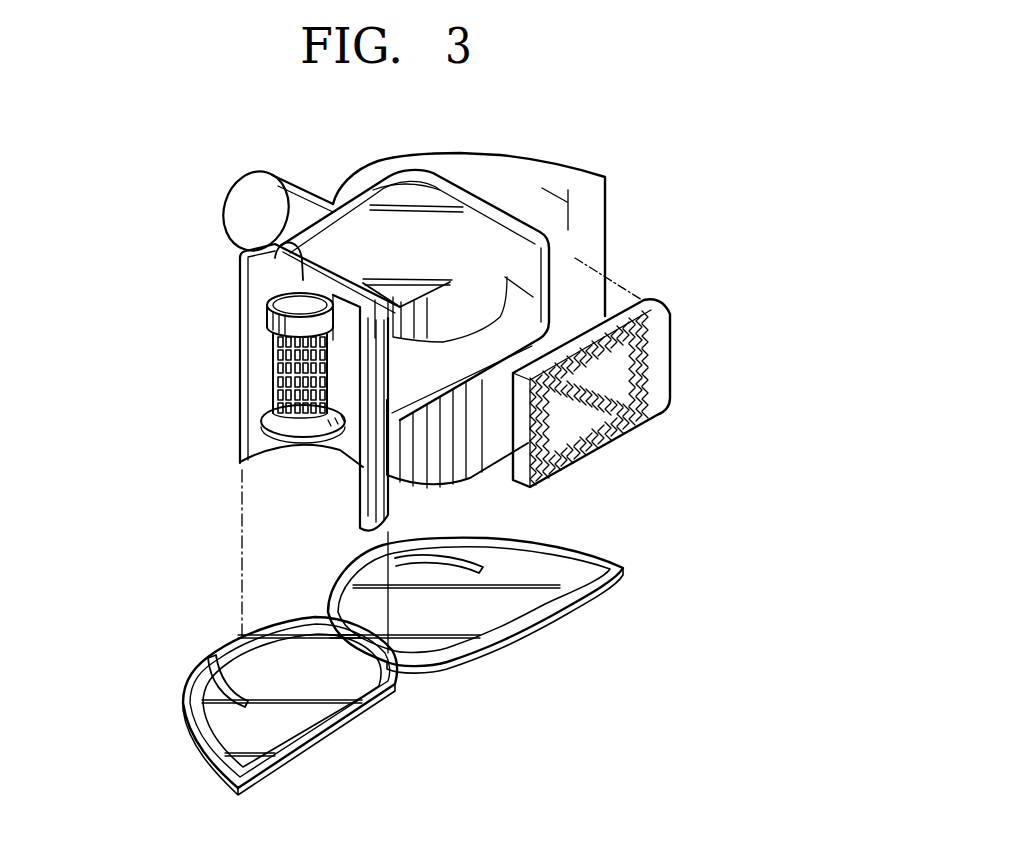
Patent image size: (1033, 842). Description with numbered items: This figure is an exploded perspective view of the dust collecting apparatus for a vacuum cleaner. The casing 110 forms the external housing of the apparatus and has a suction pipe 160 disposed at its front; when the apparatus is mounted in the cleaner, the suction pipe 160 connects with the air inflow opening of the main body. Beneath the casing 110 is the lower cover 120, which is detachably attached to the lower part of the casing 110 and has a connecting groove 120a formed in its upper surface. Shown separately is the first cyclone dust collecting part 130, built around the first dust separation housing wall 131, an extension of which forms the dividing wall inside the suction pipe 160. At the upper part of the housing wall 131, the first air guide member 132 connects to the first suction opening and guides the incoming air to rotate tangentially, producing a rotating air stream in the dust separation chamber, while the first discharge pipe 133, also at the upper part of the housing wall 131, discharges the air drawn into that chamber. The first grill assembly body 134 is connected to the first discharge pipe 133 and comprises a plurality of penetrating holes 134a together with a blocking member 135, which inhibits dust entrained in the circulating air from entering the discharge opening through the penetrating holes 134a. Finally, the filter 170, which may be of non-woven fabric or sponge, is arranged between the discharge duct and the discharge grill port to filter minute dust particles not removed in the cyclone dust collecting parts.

The casing 110 is at (496, 157).
The suction pipe 160 is at (246, 186).
The first cyclone dust collecting part 130 is at (202, 457).
The first dust separation housing wall 131 is at (240, 275).
The first air guide member 132 is at (333, 355).
The first discharge pipe 133 is at (302, 278).
The first grill assembly body 134 is at (263, 343).
The penetrating holes 134a is at (285, 383).
The blocking member 135 is at (263, 418).
The filter 170 is at (668, 330).
The lower cover 120 is at (560, 603).
The connecting groove 120a is at (212, 660).